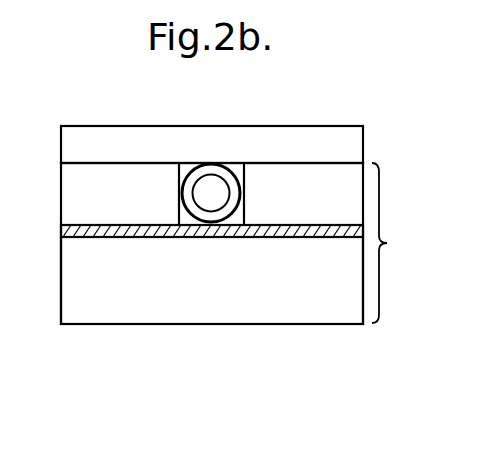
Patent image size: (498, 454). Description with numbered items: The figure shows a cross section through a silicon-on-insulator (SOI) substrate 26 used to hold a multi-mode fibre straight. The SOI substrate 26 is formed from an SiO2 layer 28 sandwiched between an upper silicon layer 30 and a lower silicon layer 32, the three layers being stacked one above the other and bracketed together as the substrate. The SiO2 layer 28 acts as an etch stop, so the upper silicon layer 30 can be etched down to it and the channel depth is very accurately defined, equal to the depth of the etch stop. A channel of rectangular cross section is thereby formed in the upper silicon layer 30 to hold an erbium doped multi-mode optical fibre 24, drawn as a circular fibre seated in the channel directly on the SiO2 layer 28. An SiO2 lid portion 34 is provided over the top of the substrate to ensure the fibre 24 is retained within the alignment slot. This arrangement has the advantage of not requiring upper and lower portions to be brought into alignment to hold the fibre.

The erbium doped multi-mode optical fibre 24 is at (221, 172).
The silicon-on-insulator (SOI) substrate 26 is at (240, 243).
The SiO2 layer 28 is at (70, 230).
The upper silicon layer 30 is at (78, 196).
The lower silicon layer 32 is at (80, 278).
The SiO2 lid portion 34 is at (105, 141).